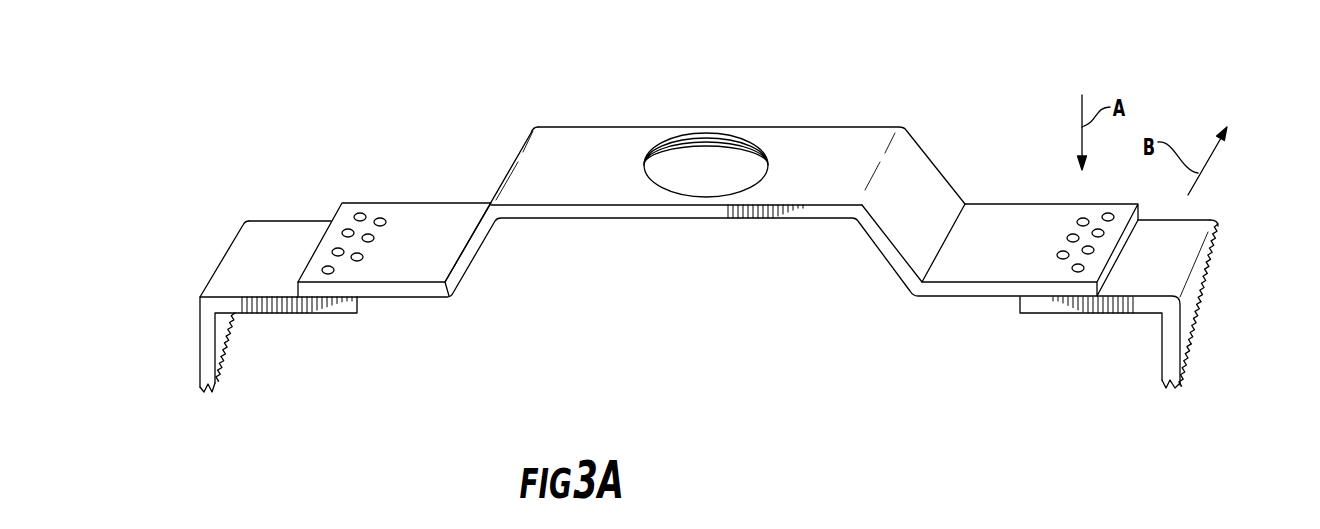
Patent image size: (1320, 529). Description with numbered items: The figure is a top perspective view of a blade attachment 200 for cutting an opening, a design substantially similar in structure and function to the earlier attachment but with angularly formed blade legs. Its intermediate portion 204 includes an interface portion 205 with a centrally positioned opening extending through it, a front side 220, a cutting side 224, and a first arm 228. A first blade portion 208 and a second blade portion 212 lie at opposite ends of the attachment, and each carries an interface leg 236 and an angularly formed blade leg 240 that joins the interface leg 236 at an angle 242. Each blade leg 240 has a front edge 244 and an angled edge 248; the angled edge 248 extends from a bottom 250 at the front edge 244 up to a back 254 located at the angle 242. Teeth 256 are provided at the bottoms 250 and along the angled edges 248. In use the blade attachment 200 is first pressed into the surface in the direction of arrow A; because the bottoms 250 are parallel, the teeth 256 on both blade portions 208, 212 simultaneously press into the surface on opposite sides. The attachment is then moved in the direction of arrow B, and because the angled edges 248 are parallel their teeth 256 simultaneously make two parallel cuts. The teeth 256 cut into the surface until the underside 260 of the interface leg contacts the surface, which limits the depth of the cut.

The blade attachment 200 is at (308, 136).
The intermediate portion 204 is at (927, 187).
The interface portion 205 is at (835, 137).
The first blade portion 208 is at (1163, 273).
The second blade portion 212 is at (233, 263).
The front side 220 is at (632, 210).
The cutting side 224 is at (813, 125).
The first arm 228 is at (997, 217).
The interface leg 236 is at (280, 240).
The blade leg 240 is at (222, 318).
The angle 242 is at (200, 295).
The front edge 244 is at (205, 362).
The angled edge 248 is at (222, 370).
The bottom 250 is at (213, 392).
The back 254 is at (1222, 223).
The teeth 256 is at (1185, 367).
The underside 260 is at (1058, 315).